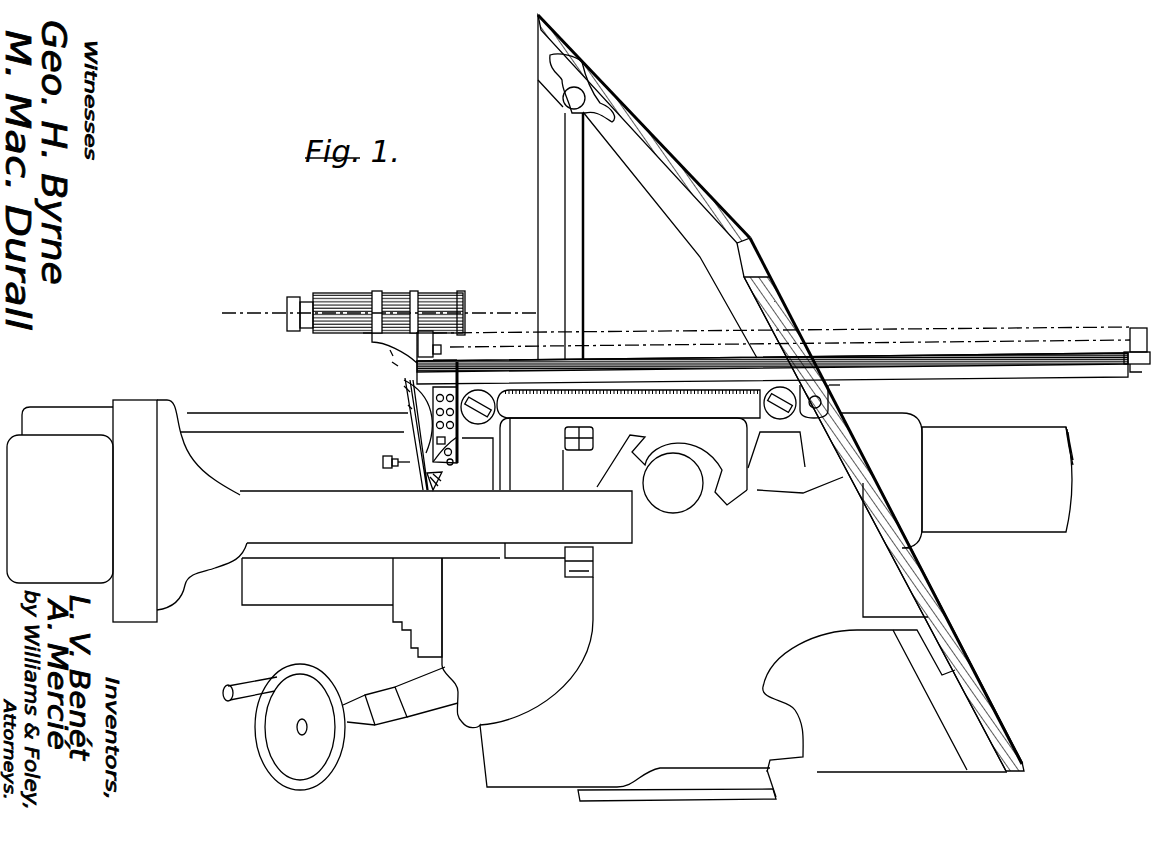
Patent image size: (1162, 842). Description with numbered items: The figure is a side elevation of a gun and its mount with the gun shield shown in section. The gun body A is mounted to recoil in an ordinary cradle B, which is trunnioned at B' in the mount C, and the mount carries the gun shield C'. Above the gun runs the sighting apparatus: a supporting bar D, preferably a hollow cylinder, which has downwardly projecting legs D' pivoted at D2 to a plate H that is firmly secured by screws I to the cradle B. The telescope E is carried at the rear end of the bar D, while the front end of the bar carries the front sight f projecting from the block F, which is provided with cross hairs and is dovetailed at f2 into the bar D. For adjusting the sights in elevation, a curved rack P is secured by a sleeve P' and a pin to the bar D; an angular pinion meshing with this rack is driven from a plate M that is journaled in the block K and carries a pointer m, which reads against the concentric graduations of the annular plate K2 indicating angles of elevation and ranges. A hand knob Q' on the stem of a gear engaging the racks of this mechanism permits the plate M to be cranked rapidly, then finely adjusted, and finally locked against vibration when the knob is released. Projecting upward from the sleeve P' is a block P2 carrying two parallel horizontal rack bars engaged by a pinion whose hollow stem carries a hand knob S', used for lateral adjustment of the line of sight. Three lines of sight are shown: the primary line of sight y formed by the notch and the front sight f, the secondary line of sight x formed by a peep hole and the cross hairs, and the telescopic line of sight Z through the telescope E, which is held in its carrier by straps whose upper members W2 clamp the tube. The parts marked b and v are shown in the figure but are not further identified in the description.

The gun body A is at (540, 528).
The cradle B is at (671, 461).
The trunnion B' is at (673, 499).
The mount C is at (724, 642).
The gun shield C' is at (669, 187).
The supporting bar D is at (772, 339).
The downwardly projecting legs D' is at (835, 356).
The pivot D2 is at (836, 386).
The telescope E is at (353, 303).
The block F is at (1130, 330).
The front sight f is at (1135, 328).
The dovetail f2 is at (1138, 366).
The plate H is at (628, 404).
The screws I is at (484, 398).
The block K is at (408, 386).
The annular plate K2 is at (406, 395).
The plate M is at (407, 450).
The curved rack P is at (431, 446).
The sleeve P' is at (455, 350).
The block P2 is at (435, 345).
The hand knob Q' is at (381, 463).
The hand knob S' is at (466, 332).
The upper members of telescope carrier W2 is at (398, 302).
The telescopic line of sight Z is at (379, 314).
The lugs b is at (619, 461).
The pointer m is at (408, 407).
The pivot v is at (392, 363).
The secondary line of sight x is at (391, 350).
The primary line of sight y is at (364, 334).